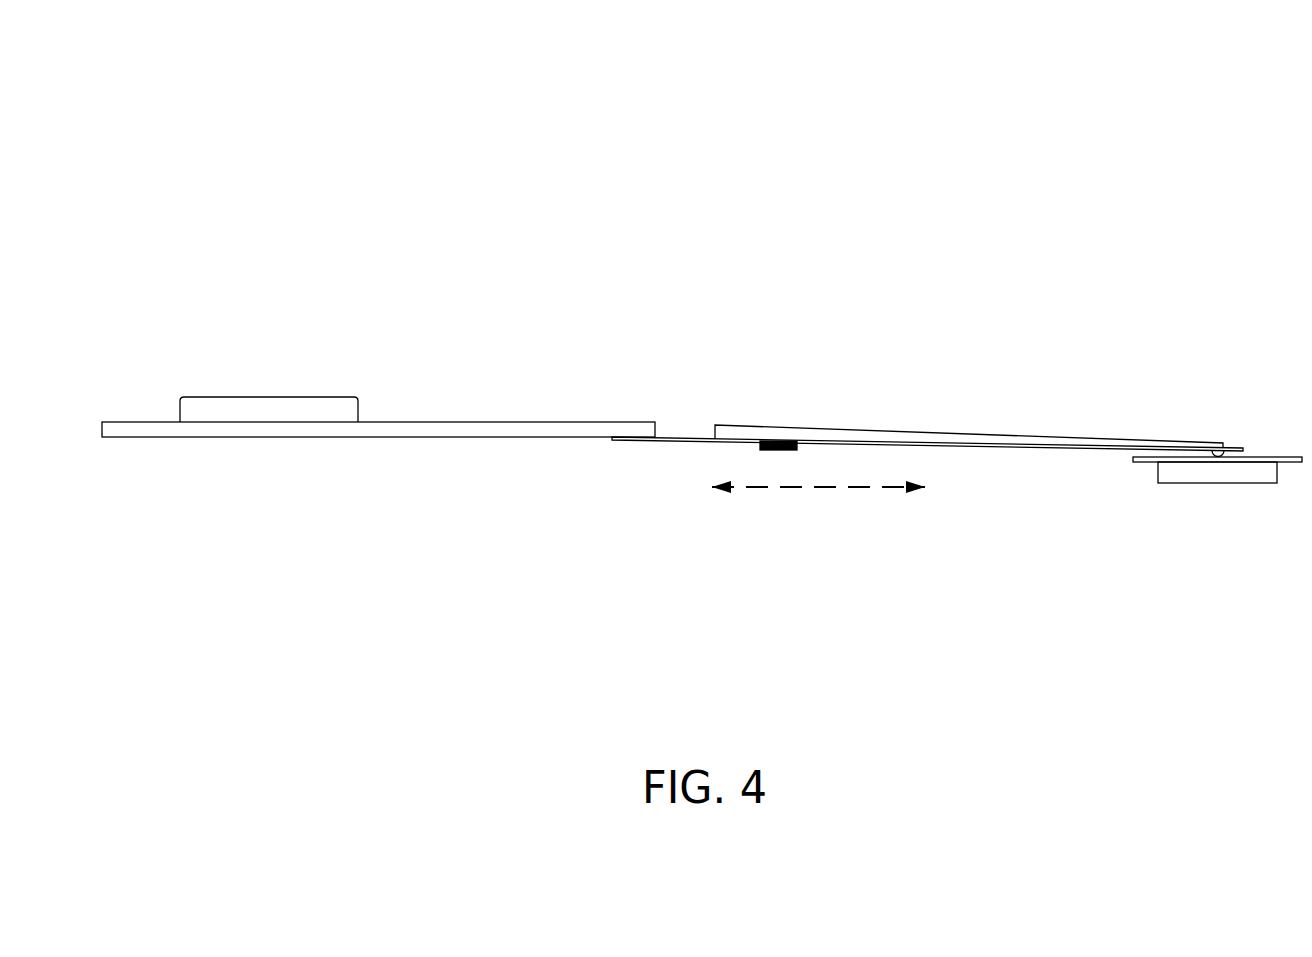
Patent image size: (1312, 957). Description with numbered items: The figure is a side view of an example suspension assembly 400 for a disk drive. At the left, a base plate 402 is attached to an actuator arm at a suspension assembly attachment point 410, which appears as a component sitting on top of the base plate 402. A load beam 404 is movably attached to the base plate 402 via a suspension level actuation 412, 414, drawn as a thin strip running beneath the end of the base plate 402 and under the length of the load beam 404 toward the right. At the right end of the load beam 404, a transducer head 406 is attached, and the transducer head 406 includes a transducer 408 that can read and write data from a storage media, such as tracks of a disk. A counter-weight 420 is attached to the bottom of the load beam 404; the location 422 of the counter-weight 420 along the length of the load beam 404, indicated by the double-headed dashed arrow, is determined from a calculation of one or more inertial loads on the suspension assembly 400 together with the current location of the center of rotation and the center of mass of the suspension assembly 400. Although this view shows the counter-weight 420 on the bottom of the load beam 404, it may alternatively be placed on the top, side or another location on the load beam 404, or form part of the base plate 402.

The suspension assembly 400 is at (298, 102).
The base plate 402 is at (197, 437).
The load beam 404 is at (970, 431).
The transducer head 406 is at (1265, 458).
The transducer 408 is at (1217, 483).
The suspension assembly attachment point 410 is at (270, 398).
The suspension level actuation 412 is at (927, 504).
The conductive trace 414 is at (686, 440).
The counter-weight 420 is at (783, 450).
The location of the counter-weight 422 is at (924, 526).